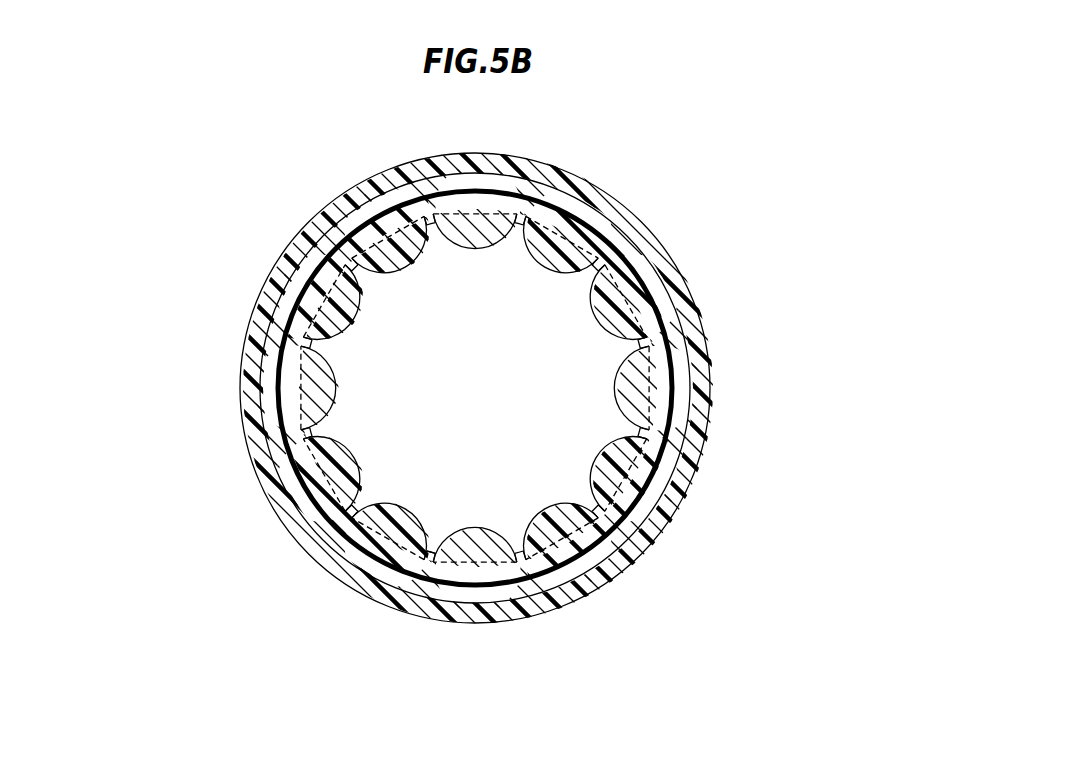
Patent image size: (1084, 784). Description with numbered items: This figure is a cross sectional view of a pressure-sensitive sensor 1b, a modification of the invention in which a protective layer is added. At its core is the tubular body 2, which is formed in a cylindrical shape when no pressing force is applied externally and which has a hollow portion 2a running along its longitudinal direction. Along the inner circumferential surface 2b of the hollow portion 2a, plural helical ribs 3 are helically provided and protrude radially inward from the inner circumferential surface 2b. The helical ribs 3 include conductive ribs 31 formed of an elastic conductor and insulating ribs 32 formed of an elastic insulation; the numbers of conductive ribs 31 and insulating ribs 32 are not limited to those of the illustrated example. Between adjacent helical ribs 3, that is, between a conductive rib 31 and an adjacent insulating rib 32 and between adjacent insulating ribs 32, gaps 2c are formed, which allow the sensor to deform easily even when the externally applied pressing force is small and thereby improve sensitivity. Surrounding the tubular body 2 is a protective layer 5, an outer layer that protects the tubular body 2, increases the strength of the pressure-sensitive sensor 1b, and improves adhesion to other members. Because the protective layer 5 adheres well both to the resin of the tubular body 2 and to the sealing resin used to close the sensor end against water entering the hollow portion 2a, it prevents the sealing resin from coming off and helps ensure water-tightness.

The pressure-sensitive sensor 1b is at (318, 183).
The tubular body 2 is at (280, 358).
The hollow portion 2a is at (373, 415).
The inner circumferential surface 2b is at (350, 508).
The gap 2c is at (437, 552).
The helical rib 3 is at (786, 98).
The conductive rib 31 is at (518, 195).
The insulating rib 32 is at (545, 238).
The protective layer 5 is at (697, 416).